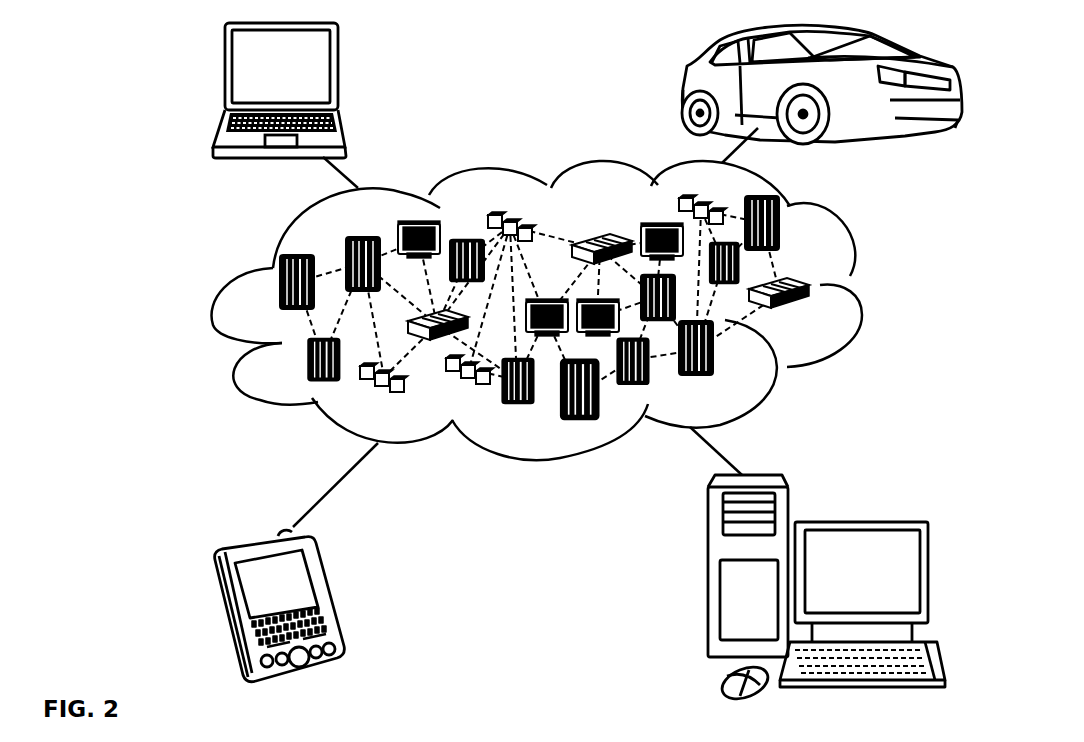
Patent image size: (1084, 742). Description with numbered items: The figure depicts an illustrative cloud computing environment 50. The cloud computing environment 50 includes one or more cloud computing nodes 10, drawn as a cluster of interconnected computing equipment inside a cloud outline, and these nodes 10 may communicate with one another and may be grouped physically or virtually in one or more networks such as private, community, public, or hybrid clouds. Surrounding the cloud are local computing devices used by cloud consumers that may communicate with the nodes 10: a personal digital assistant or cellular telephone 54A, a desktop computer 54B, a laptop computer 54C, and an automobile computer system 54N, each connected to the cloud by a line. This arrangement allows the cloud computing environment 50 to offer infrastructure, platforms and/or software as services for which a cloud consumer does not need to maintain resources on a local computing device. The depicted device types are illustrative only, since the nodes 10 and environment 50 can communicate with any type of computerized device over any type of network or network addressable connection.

The cloud computing node 10 is at (817, 314).
The cloud computing environment 50 is at (561, 310).
The personal digital assistant or cellular telephone 54A is at (330, 596).
The desktop computer 54B is at (862, 521).
The laptop computer 54C is at (338, 72).
The automobile computer system 54N is at (681, 86).